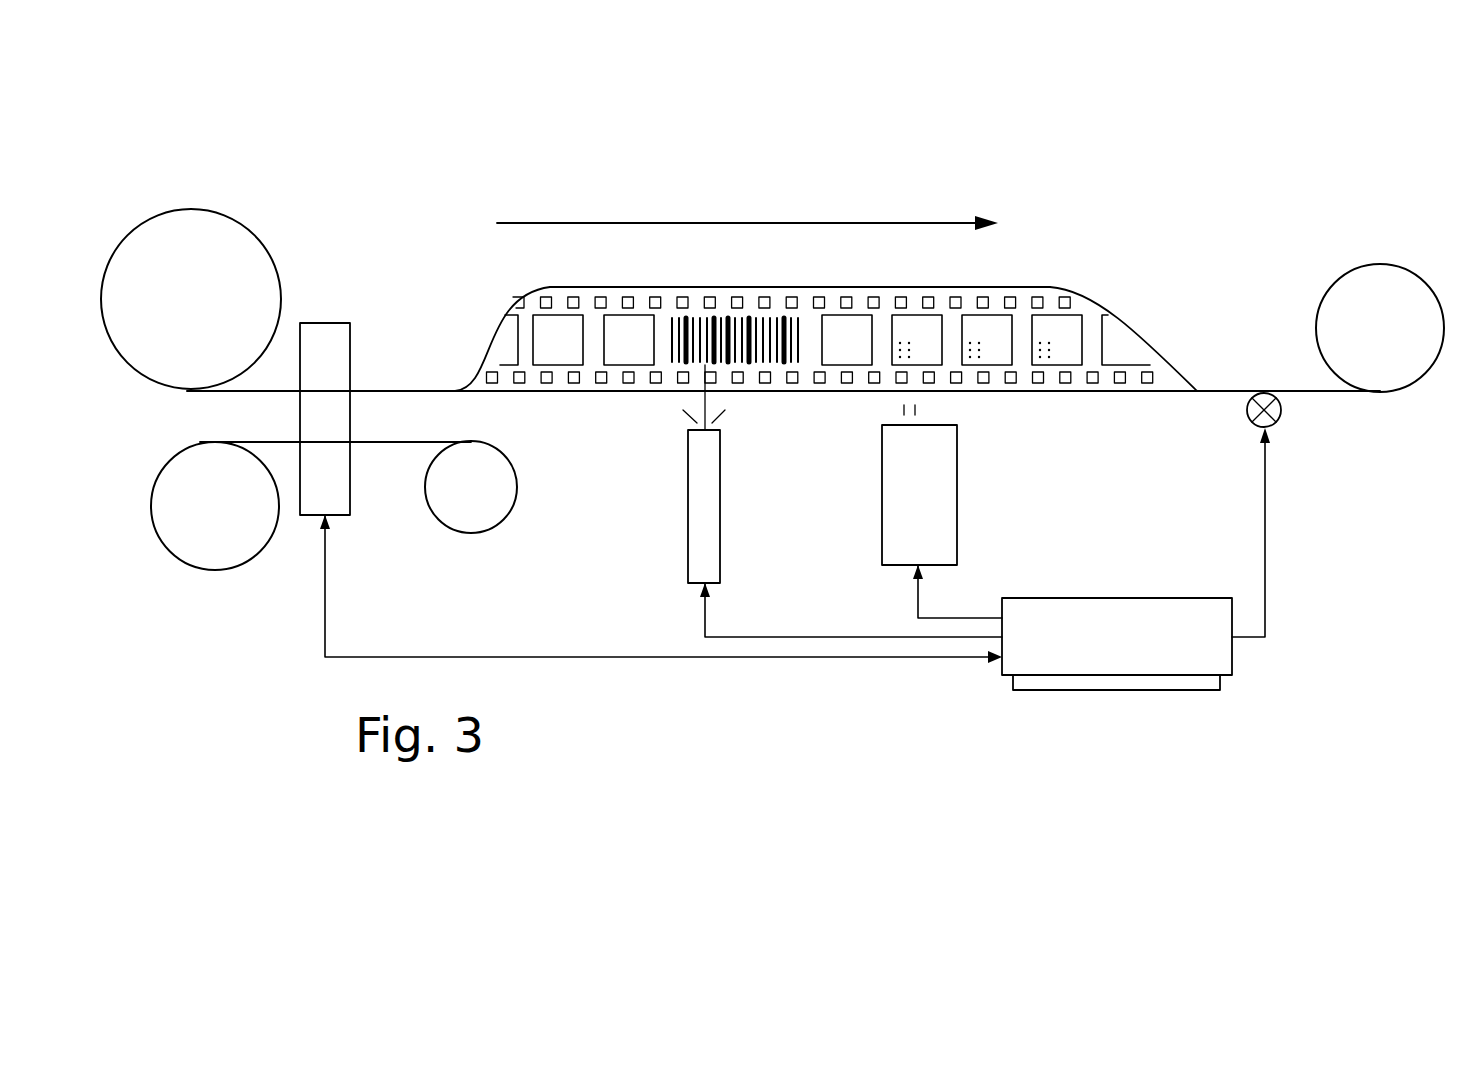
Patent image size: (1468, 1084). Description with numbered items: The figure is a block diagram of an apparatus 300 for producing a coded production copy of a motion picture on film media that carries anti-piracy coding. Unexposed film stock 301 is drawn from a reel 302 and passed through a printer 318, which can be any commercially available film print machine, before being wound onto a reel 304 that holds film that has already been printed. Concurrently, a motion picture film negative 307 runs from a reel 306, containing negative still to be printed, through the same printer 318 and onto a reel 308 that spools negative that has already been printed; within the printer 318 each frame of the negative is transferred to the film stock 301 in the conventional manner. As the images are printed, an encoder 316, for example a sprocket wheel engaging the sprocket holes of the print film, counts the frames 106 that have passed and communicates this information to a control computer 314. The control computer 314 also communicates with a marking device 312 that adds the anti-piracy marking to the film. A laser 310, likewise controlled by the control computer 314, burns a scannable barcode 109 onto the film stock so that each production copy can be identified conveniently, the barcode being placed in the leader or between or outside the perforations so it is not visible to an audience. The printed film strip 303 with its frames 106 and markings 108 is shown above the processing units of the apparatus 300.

The apparatus 300 is at (836, 734).
The film stock 301 is at (253, 391).
The reel 302 is at (272, 260).
The film strip 303 is at (557, 287).
The reel 304 is at (1318, 298).
The reel 306 is at (243, 567).
The film negative 307 is at (405, 443).
The reel 308 is at (470, 533).
The laser 310 is at (688, 467).
The marking device 312 is at (919, 485).
The control computer 314 is at (1117, 598).
The encoder 316 is at (1249, 419).
The printer 318 is at (325, 419).
The frames 106 is at (620, 315).
The marking 108 is at (895, 352).
The barcode 109 is at (773, 365).